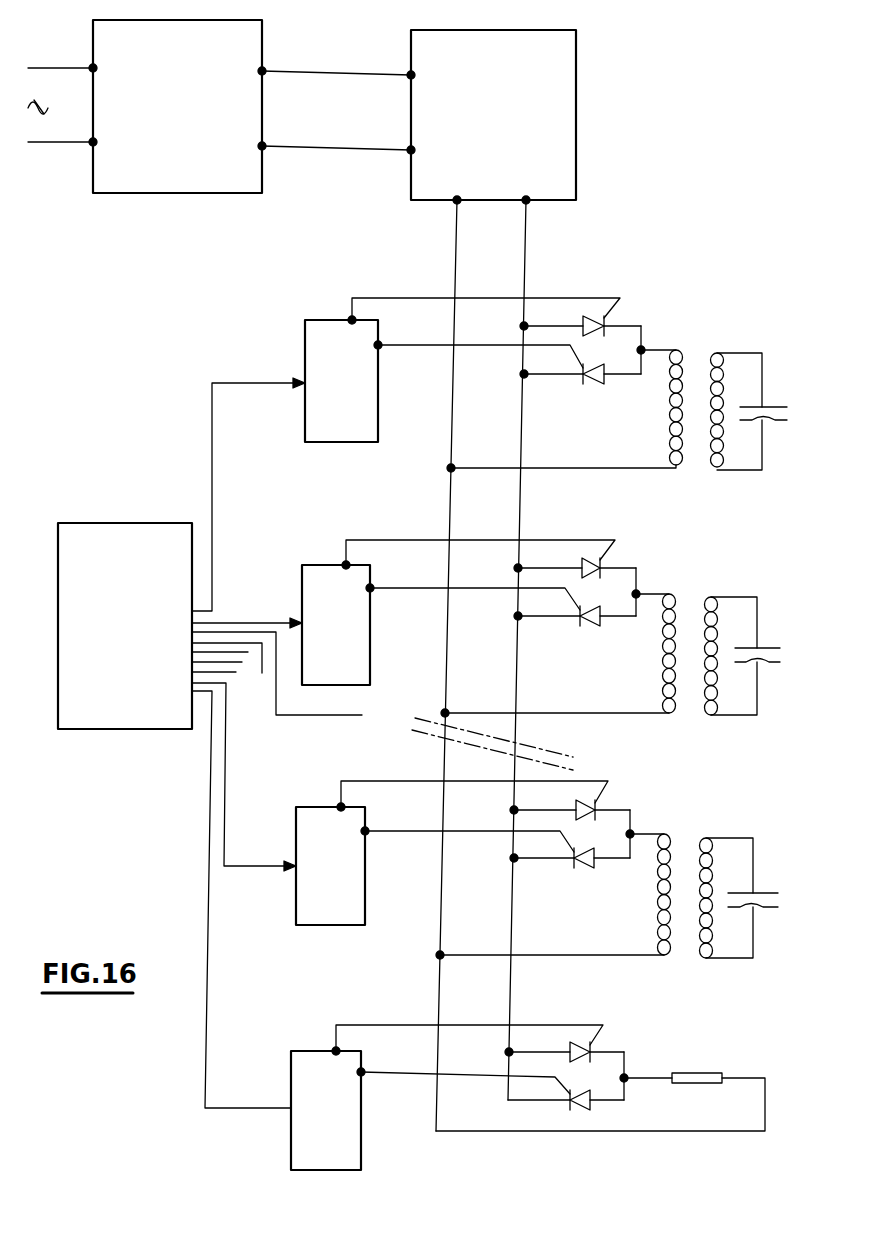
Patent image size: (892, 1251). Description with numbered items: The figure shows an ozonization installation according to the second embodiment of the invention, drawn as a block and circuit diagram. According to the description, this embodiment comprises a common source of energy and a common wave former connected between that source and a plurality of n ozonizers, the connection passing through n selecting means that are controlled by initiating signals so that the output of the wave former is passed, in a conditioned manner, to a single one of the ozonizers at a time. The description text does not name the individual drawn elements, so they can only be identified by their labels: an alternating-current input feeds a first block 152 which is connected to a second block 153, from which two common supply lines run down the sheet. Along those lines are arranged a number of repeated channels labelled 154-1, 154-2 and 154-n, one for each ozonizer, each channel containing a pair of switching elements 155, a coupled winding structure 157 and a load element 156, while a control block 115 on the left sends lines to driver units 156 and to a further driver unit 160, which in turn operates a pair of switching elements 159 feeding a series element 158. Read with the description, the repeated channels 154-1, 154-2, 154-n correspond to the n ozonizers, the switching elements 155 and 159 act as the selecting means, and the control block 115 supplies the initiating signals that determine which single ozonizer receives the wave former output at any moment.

The control unit 115 is at (132, 532).
The power supply 152 is at (137, 193).
The rectifier / DC supply 153 is at (576, 156).
The transformer (first channel) 154-1 is at (716, 322).
The transformer (second channel) 154-2 is at (706, 566).
The transformer (nth channel) 154-n is at (686, 828).
The thyristors (SCR pair) 155 is at (582, 285).
The driver circuit / capacitor 156 is at (337, 442).
The transformer core 157 is at (688, 462).
The resistor 158 is at (694, 1076).
The thyristors (SCR pair) 159 is at (608, 1045).
The driver circuit 160 is at (361, 1150).